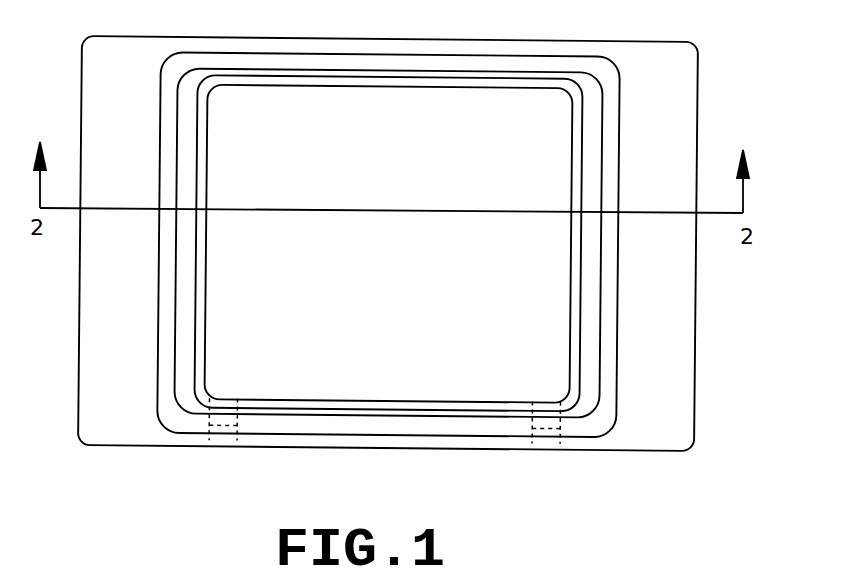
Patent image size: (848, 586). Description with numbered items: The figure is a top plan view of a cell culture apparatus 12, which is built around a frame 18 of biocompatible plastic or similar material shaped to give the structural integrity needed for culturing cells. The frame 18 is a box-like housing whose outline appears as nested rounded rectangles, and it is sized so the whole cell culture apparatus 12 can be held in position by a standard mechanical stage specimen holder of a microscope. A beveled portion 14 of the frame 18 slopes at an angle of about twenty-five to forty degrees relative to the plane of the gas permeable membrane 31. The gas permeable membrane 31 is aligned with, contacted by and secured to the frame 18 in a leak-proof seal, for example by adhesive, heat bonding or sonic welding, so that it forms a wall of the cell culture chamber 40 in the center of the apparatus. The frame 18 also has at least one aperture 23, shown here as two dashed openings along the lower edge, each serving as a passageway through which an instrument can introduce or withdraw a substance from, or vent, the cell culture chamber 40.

The cell culture apparatus 12 is at (722, 88).
The beveled portion 14 is at (203, 390).
The frame 18 is at (675, 345).
The aperture 23 is at (222, 456).
The gas permeable membrane 31 is at (552, 375).
The cell culture chamber 40 is at (372, 368).